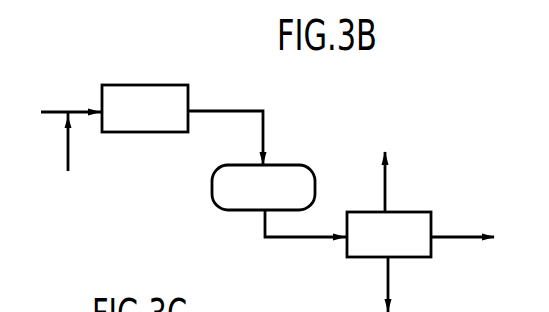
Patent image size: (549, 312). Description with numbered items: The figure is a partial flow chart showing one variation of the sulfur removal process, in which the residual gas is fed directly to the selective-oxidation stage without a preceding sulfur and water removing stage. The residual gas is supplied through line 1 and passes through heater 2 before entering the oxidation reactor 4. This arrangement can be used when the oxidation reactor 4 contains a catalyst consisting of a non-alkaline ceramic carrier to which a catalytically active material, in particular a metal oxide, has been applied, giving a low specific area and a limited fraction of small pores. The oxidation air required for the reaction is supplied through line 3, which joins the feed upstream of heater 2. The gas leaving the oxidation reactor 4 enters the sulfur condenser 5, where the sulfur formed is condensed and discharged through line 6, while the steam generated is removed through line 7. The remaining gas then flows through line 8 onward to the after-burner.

The line 1 is at (53, 111).
The heater 2 is at (157, 84).
The line 3 is at (69, 142).
The oxidation reactor 4 is at (288, 164).
The sulfur condenser 5 is at (420, 211).
The line 6 is at (389, 283).
The line 7 is at (386, 175).
The line 8 is at (473, 235).